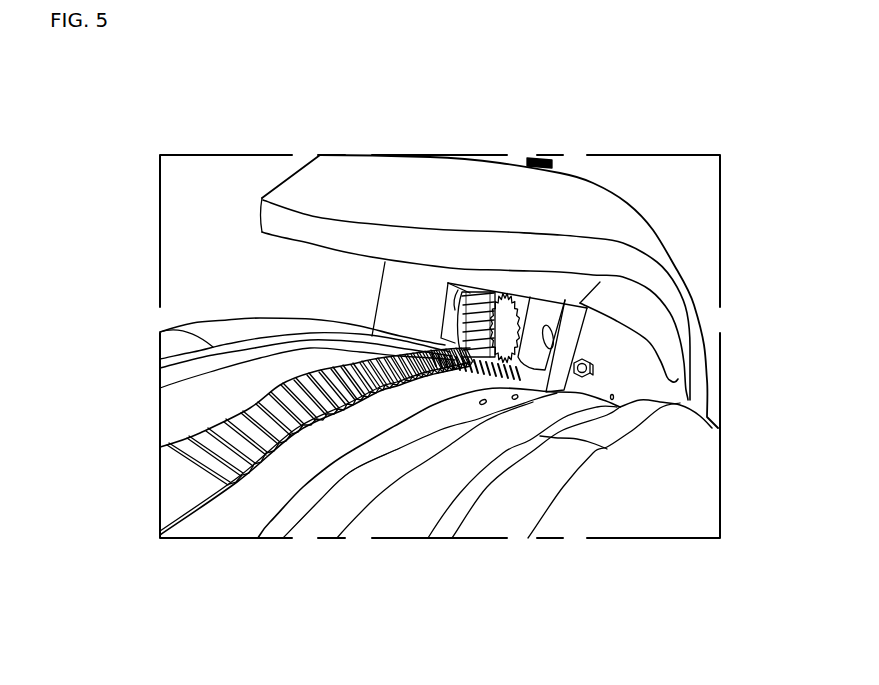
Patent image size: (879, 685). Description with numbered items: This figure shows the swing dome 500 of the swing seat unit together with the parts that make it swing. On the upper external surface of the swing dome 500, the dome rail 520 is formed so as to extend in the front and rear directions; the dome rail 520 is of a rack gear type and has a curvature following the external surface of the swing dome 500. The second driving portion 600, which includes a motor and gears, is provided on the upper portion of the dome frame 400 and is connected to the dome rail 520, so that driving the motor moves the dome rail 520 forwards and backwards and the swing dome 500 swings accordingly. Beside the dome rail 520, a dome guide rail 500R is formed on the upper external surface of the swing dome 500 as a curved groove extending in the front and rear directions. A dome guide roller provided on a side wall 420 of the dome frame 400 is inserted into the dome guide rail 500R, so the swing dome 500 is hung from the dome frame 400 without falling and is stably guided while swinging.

The dome frame 400 is at (642, 240).
The side wall 420 is at (572, 339).
The swing dome 500 is at (672, 442).
The dome guide rail 500R is at (387, 478).
The dome rail 520 is at (207, 420).
The second driving portion 600 is at (452, 297).